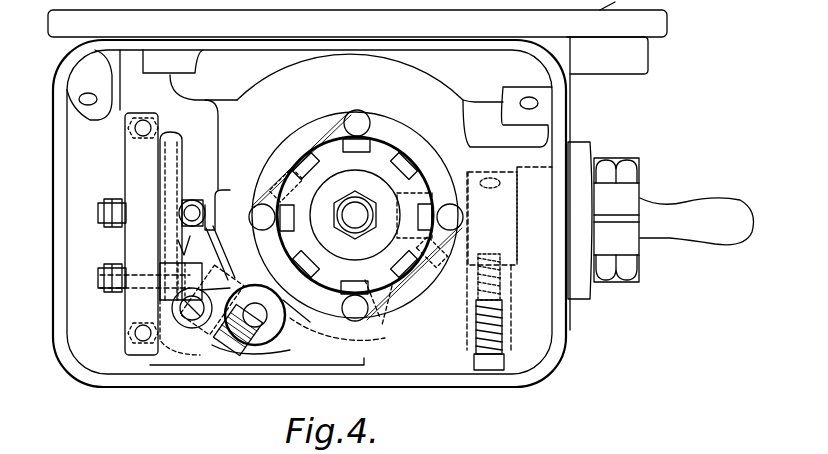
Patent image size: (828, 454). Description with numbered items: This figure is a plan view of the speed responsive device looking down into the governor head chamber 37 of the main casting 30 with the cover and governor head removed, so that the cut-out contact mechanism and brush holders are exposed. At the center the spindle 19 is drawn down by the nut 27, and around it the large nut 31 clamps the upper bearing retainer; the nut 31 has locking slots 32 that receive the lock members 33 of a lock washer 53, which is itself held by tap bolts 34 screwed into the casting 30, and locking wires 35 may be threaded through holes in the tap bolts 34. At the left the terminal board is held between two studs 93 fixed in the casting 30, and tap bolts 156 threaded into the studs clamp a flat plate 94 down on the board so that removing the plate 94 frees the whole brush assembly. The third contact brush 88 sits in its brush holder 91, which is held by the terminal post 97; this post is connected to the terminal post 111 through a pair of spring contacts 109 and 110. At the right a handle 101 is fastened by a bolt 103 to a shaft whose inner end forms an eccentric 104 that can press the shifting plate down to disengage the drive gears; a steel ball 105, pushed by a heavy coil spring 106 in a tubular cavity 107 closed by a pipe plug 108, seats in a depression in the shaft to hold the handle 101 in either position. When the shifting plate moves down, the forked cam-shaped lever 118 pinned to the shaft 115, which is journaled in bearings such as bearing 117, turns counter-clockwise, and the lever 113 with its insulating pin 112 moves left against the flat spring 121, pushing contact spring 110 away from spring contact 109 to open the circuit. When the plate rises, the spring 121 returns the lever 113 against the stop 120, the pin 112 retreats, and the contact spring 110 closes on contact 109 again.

The spindle 19 is at (360, 226).
The nut 27 is at (362, 192).
The main casting 30 is at (56, 328).
The large nut 31 is at (390, 150).
The locking slots 32 is at (408, 168).
The lock members 33 is at (312, 158).
The tap bolts 34 is at (358, 118).
The locking wires 35 is at (278, 178).
The governor head chamber 37 is at (70, 258).
The lock washer 53 is at (418, 133).
The third contact brush 88 is at (224, 360).
The brush holder 91 is at (210, 360).
The studs 93 is at (158, 126).
The flat plate 94 is at (135, 315).
The terminal post 97 is at (104, 290).
The handle 101 is at (679, 206).
The bolt 103 is at (623, 164).
The eccentric 104 is at (414, 208).
The steel ball 105 is at (500, 262).
The heavy coil spring 106 is at (476, 300).
The tubular cavity 107 is at (474, 320).
The pipe plug 108 is at (488, 370).
The spring contact 109 is at (177, 243).
The contact spring 110 is at (182, 150).
The terminal post 111 is at (104, 208).
The pin 112 is at (192, 200).
The lever 113 is at (214, 232).
The shaft 115 is at (280, 350).
The bearing 117 is at (265, 315).
The forked cam-shaped lever 118 is at (387, 322).
The stop 120 is at (227, 207).
The flat spring 121 is at (176, 260).
The tap bolts 156 is at (135, 133).